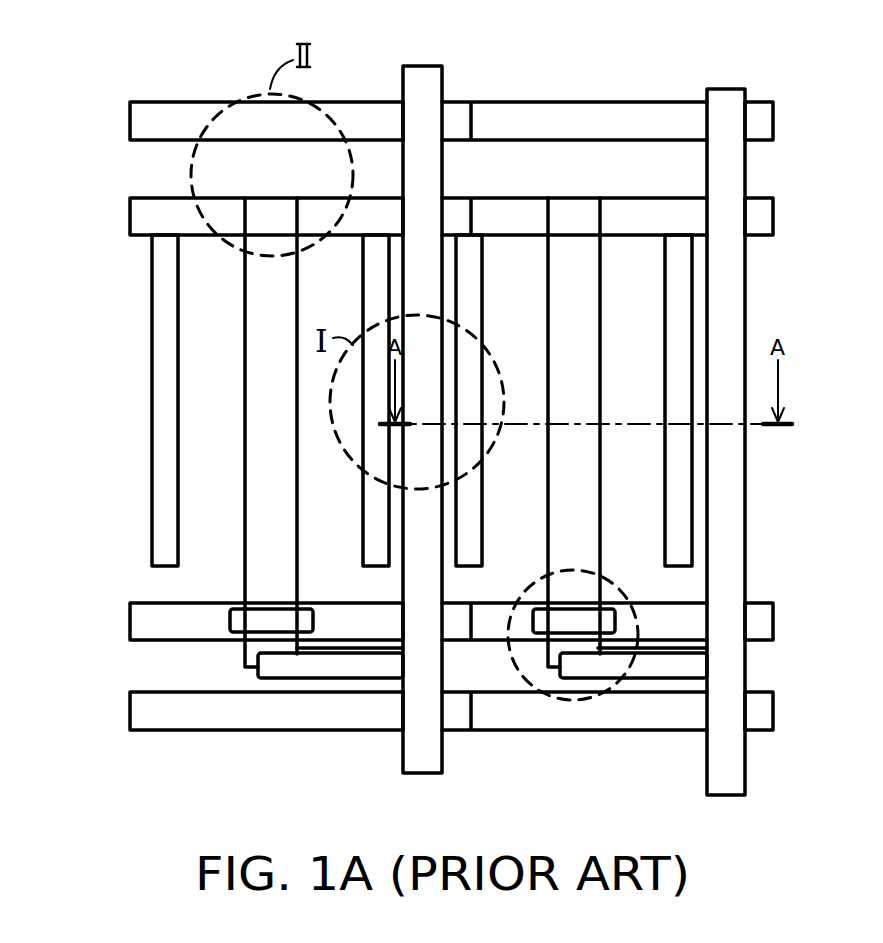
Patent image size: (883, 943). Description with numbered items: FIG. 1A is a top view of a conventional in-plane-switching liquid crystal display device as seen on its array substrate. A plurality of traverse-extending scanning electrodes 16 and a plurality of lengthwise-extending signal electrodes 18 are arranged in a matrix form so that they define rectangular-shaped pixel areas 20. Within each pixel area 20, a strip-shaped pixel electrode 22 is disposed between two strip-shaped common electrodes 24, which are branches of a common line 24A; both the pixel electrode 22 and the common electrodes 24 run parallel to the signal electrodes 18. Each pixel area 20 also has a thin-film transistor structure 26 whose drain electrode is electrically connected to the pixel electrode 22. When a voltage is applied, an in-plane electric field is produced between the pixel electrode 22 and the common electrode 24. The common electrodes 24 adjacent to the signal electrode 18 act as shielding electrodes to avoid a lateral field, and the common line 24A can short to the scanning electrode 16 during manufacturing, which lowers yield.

The scanning electrode 16 is at (137, 122).
The signal electrode 18 is at (428, 83).
The pixel area 20 is at (657, 195).
The pixel electrode 22 is at (580, 375).
The common electrode 24 is at (473, 292).
The common line 24A is at (137, 220).
The thin-film transistor structure 26 is at (568, 703).